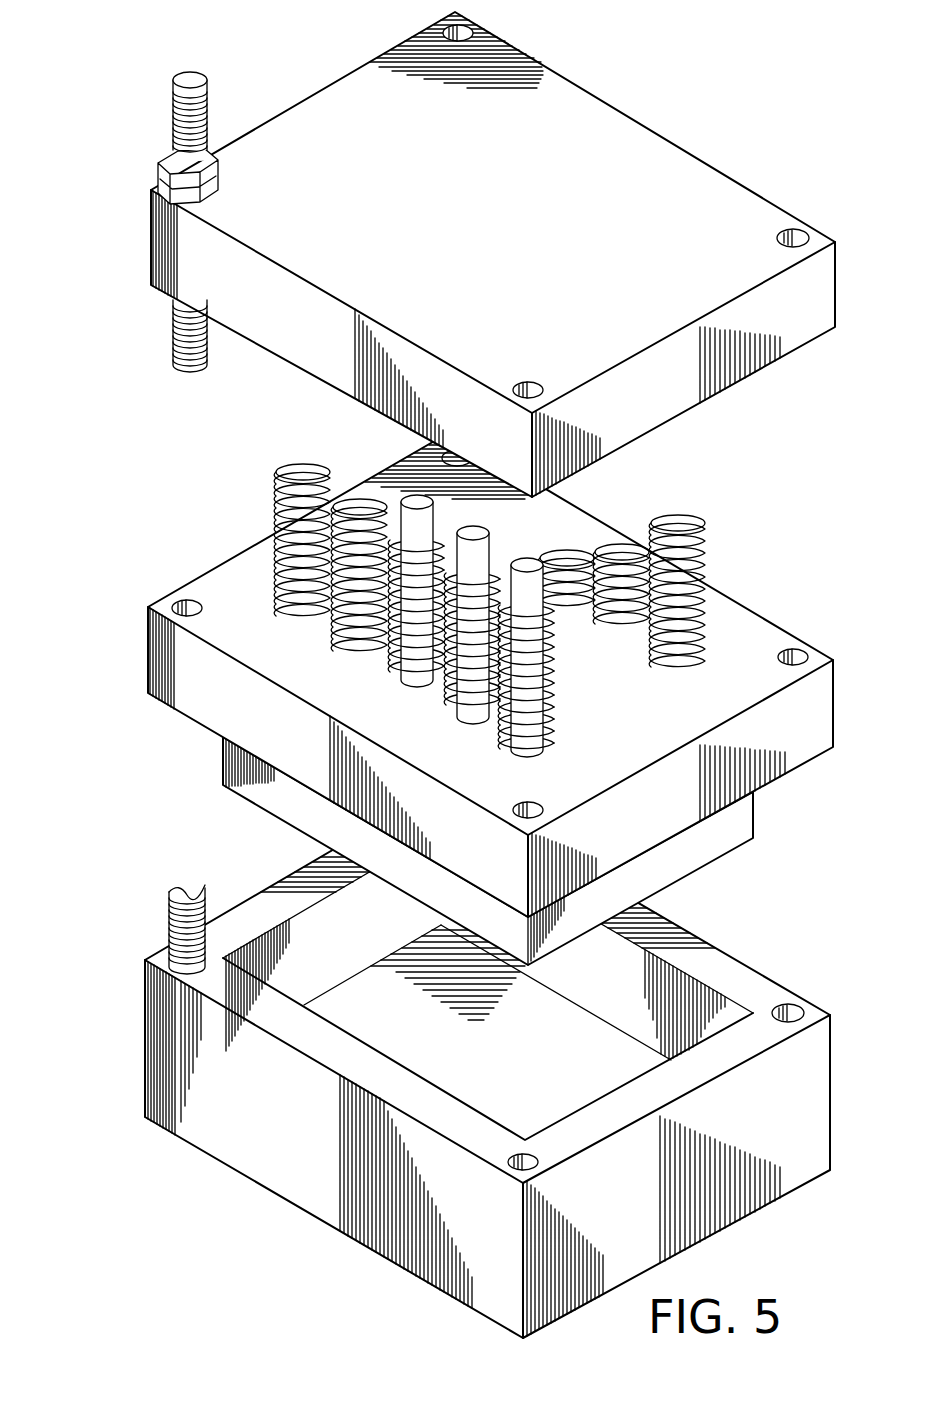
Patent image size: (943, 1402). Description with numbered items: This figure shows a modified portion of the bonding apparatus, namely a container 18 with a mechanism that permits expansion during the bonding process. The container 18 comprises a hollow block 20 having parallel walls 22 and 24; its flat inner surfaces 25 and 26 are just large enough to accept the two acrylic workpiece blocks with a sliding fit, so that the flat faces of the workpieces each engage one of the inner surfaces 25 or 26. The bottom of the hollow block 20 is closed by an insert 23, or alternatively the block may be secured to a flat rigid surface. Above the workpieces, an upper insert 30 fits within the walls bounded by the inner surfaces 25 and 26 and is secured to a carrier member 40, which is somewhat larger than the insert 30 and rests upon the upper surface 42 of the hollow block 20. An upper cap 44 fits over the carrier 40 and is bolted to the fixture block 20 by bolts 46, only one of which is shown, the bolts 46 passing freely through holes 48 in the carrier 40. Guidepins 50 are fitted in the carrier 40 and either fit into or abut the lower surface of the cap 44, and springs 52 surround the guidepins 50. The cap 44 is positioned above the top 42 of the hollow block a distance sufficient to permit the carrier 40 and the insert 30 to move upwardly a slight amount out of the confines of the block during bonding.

The container 18 is at (130, 826).
The hollow block 20 is at (466, 1062).
The wall 22 is at (284, 882).
The insert 23 is at (496, 1084).
The wall 24 is at (269, 1137).
The inner surface 25 is at (304, 969).
The inner surface 26 is at (606, 984).
The upper insert 30 is at (221, 757).
The carrier member 40 is at (244, 726).
The upper surface 42 is at (760, 1037).
The upper cap 44 is at (672, 139).
The bolt 46 is at (174, 318).
The hole 48 is at (192, 600).
The guidepin 50 is at (522, 557).
The spring 52 is at (503, 591).